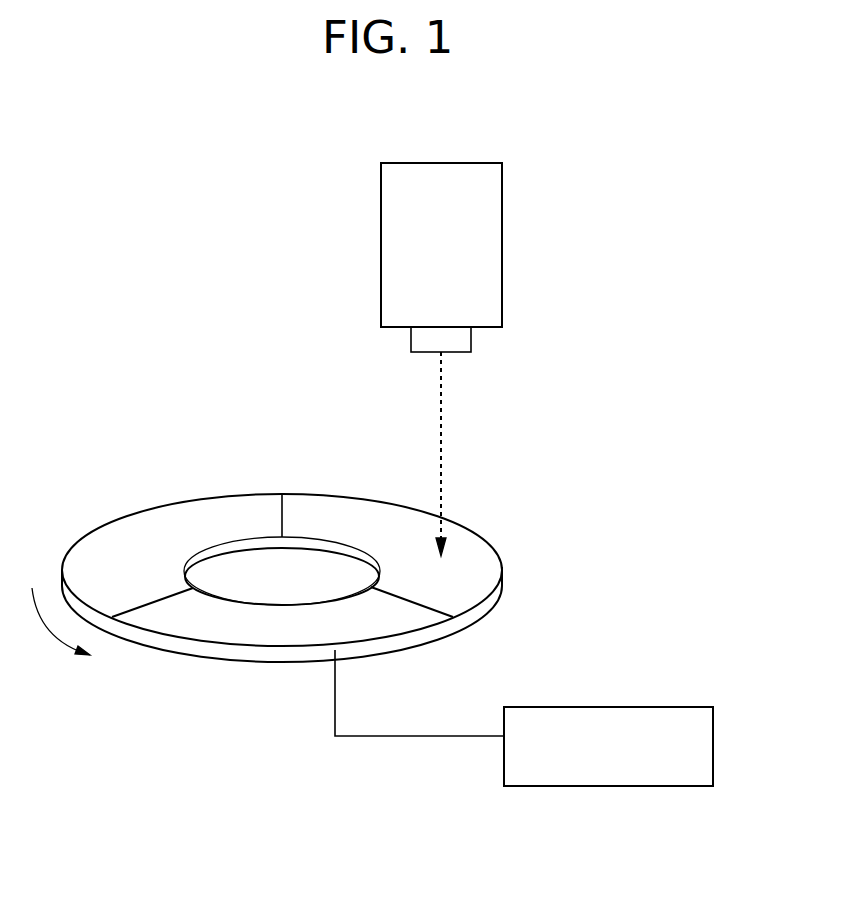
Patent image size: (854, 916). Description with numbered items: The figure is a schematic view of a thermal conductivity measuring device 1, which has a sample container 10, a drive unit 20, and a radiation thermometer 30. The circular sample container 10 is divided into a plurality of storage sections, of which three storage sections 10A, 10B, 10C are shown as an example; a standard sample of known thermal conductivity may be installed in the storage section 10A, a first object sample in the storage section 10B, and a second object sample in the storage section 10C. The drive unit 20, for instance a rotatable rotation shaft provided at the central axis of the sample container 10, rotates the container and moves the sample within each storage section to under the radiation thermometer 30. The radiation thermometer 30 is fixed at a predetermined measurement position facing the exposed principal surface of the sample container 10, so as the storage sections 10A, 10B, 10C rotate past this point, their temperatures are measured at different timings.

The thermal conductivity measuring device 1 is at (626, 155).
The sample container 10 is at (376, 571).
The storage section 10A is at (460, 525).
The storage section 10B is at (148, 567).
The storage section 10C is at (358, 619).
The drive unit 20 is at (610, 778).
The radiation thermometer 30 is at (490, 228).